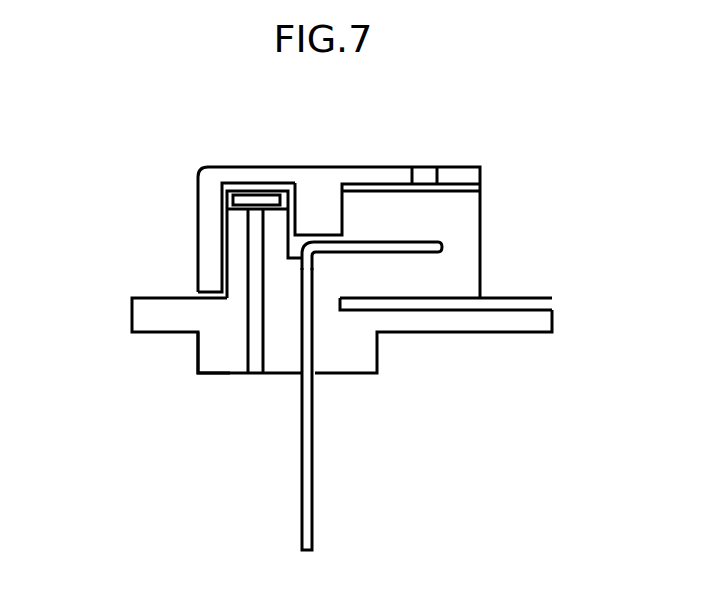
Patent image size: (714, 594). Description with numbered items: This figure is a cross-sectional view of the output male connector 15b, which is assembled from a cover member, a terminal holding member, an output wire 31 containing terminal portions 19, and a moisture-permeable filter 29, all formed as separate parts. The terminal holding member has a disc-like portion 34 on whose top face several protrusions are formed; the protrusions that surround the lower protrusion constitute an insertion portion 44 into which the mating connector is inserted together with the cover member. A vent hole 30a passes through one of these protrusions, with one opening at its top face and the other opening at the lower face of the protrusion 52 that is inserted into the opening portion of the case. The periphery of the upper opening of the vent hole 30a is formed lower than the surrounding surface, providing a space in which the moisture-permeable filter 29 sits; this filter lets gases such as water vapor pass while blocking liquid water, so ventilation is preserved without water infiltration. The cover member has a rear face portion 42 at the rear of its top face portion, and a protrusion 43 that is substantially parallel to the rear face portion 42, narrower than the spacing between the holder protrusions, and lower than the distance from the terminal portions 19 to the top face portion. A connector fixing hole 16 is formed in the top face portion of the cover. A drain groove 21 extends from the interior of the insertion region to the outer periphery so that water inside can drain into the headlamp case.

The output male connector 15b is at (462, 167).
The connector fixing hole 16 is at (425, 175).
The terminal portions 19 is at (452, 247).
The drain groove 21 is at (518, 304).
The moisture-permeable filter 29 is at (258, 193).
The vent hole 30a is at (252, 258).
The output wire 31 is at (313, 468).
The disc-like portion 34 is at (148, 313).
The rear face portion 42 is at (208, 205).
The protrusion 43 is at (318, 215).
The insertion portion 44 is at (455, 210).
The protrusion 52 is at (198, 358).